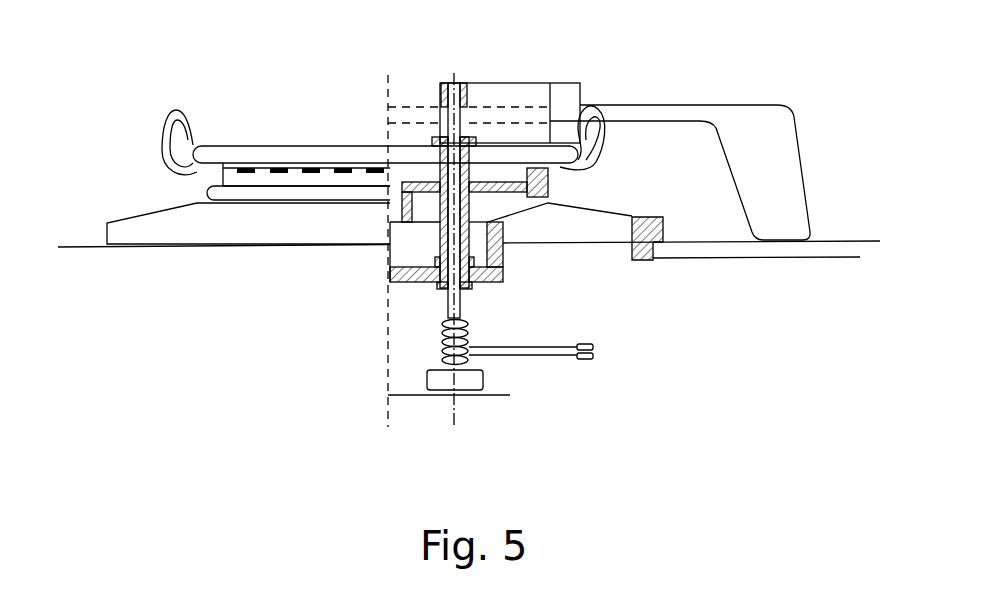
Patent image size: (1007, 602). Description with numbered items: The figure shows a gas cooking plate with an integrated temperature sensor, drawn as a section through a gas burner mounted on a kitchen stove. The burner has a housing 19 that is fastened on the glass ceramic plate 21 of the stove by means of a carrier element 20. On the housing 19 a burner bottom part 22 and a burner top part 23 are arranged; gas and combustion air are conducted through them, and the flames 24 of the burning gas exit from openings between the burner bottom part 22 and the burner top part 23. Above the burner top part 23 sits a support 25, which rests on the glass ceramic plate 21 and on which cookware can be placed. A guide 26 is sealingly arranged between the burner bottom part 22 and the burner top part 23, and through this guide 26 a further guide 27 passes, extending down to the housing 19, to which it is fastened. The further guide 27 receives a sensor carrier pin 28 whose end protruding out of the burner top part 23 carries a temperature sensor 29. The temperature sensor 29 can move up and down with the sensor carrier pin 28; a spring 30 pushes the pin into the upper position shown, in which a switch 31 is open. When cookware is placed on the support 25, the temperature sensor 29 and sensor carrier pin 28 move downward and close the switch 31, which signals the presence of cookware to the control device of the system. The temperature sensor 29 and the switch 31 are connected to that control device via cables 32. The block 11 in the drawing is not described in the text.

The housing block 11 is at (581, 90).
The housing 19 is at (503, 250).
The carrier element 20 is at (654, 258).
The glass ceramic plate 21 is at (755, 250).
The burner bottom part 22 is at (550, 190).
The burner top part 23 is at (305, 160).
The flames 24 is at (597, 132).
The support 25 is at (657, 107).
The guide 26 is at (436, 140).
The further guide 27 is at (477, 289).
The sensor carrier pin 28 is at (461, 120).
The temperature sensor 29 is at (456, 80).
The spring 30 is at (440, 333).
The switch 31 is at (483, 395).
The cables 32 is at (597, 347).